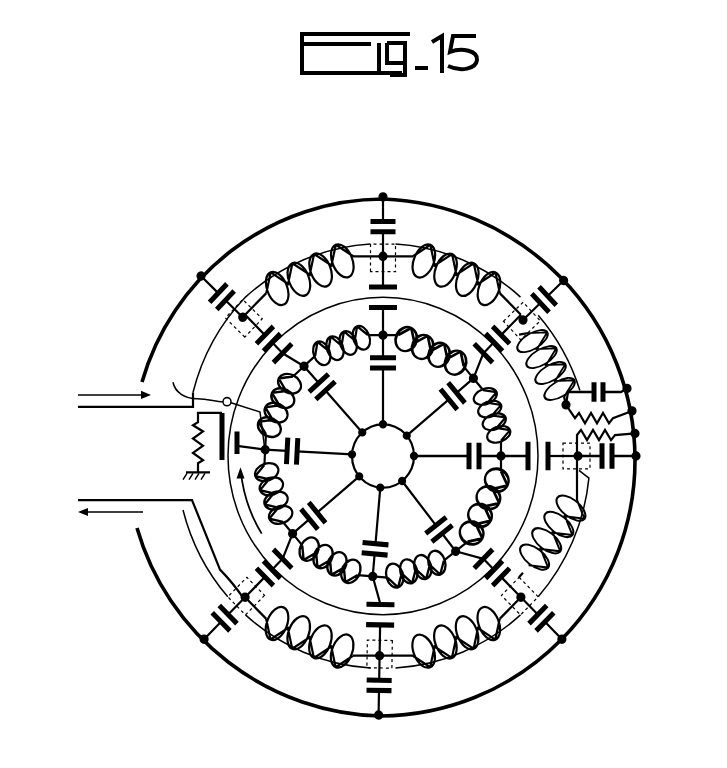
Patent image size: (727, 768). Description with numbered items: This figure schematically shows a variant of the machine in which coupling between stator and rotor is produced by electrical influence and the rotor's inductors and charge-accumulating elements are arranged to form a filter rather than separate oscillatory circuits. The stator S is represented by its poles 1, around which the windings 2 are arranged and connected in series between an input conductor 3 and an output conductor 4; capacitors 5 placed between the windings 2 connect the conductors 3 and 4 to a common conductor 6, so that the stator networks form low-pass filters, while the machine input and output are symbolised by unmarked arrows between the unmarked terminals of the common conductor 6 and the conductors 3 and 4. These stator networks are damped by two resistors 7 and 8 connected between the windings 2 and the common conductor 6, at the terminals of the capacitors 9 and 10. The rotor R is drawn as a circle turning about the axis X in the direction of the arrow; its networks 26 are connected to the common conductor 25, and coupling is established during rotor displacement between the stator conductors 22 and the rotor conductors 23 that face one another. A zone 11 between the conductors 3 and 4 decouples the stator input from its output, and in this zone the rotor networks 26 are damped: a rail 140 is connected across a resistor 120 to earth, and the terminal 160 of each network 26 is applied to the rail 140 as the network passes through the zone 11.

The pole 1 is at (308, 280).
The winding 2 is at (366, 281).
The input conductor 3 is at (135, 419).
The output conductor 4 is at (161, 530).
The capacitor 5 is at (398, 232).
The common conductor 6 is at (502, 205).
The resistor 7 is at (611, 399).
The resistor 8 is at (618, 441).
The capacitor 9 is at (598, 370).
The capacitor 10 is at (570, 516).
The zone 11 is at (142, 495).
The stator conductor 22 is at (226, 324).
The rotor conductor 23 is at (340, 344).
The common conductor 25 is at (383, 455).
The rotor network 26 is at (308, 459).
The resistor 120 is at (179, 446).
The rail 140 is at (231, 468).
The terminal 160 is at (207, 395).
The rotor R is at (383, 439).
The stator S is at (573, 533).